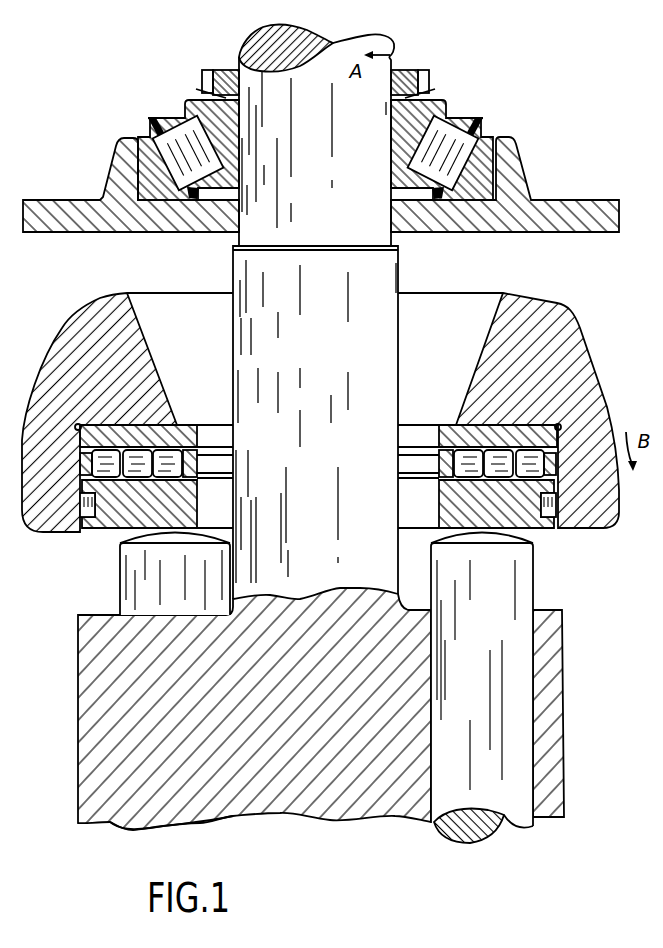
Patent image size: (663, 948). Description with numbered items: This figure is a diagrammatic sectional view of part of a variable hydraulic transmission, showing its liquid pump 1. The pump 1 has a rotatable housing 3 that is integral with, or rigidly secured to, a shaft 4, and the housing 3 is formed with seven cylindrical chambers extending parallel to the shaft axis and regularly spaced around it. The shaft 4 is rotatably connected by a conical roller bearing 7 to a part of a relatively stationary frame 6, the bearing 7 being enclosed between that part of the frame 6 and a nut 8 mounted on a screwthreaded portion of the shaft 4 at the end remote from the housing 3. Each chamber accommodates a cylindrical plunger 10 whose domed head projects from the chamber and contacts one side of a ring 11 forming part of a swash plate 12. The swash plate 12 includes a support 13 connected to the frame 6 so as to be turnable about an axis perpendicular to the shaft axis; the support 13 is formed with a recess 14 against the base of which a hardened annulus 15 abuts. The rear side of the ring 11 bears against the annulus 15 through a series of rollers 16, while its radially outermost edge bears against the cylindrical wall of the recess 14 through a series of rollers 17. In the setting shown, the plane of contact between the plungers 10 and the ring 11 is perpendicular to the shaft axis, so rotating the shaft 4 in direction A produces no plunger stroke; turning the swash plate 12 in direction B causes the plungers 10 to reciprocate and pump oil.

The liquid pump 1 is at (74, 657).
The rotatable housing 3 is at (140, 820).
The shaft 4 is at (238, 262).
The relatively stationary frame 6 is at (157, 236).
The conical roller bearing 7 is at (197, 100).
The nut 8 is at (228, 70).
The cylindrical piston or plunger 10 is at (526, 568).
The ring 11 is at (115, 528).
The swash plate 12 is at (540, 297).
The support 13 is at (68, 327).
The recess 14 is at (58, 532).
The hardened annulus 15 is at (197, 440).
The rollers 16 is at (168, 452).
The rollers 17 is at (82, 523).